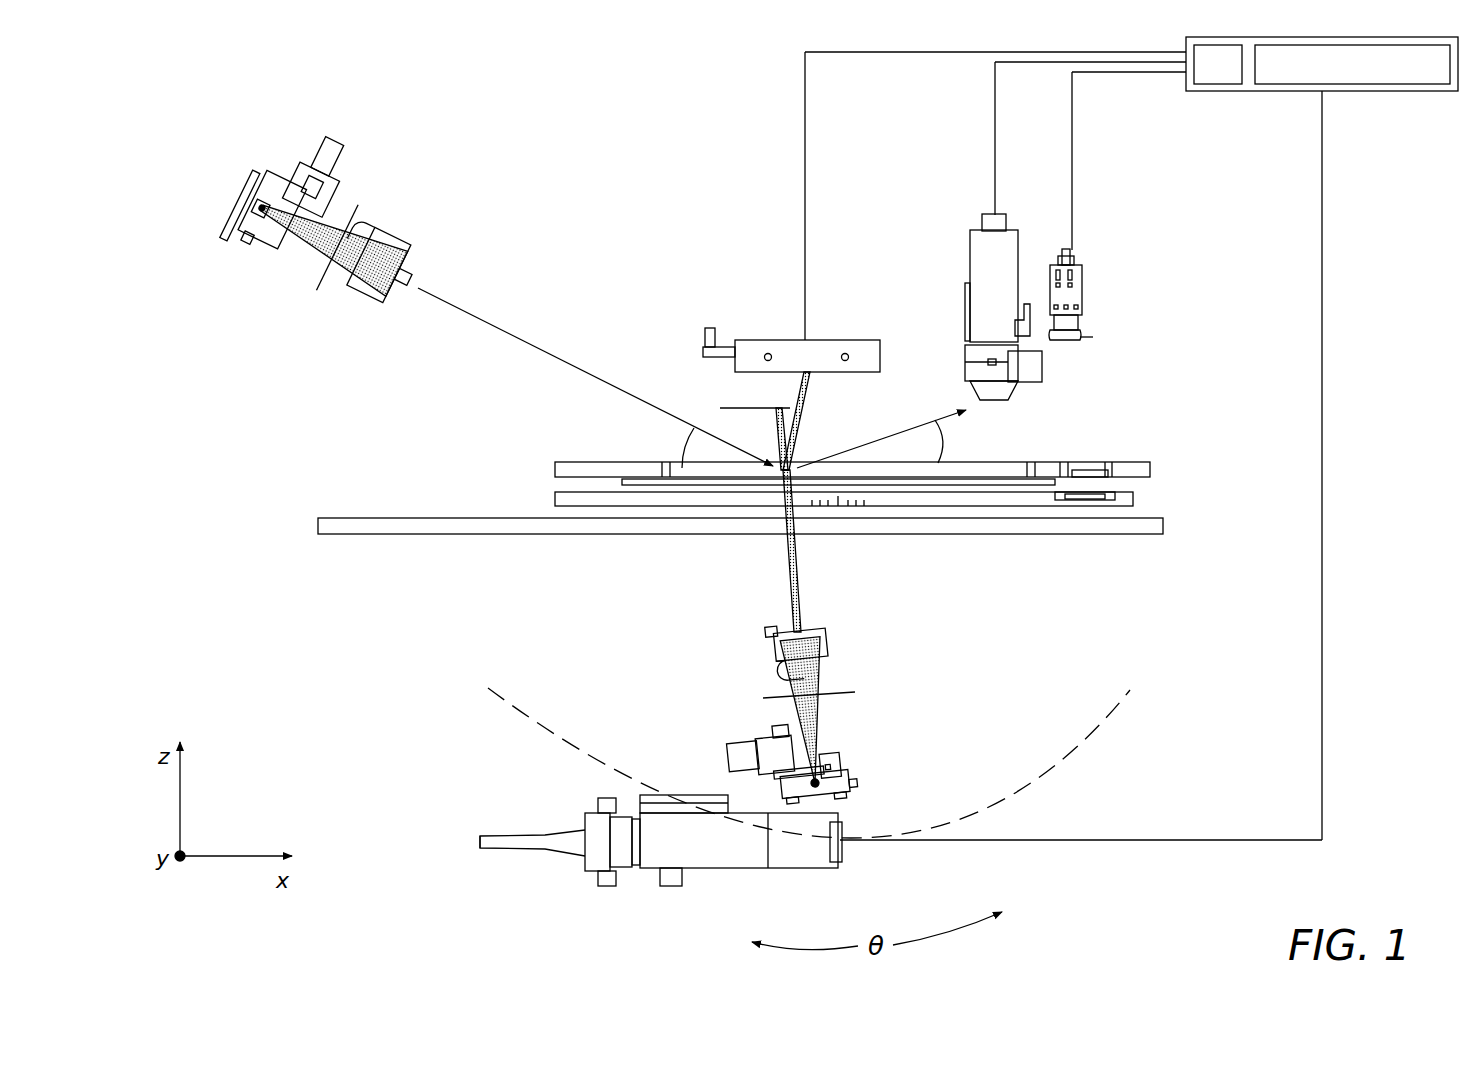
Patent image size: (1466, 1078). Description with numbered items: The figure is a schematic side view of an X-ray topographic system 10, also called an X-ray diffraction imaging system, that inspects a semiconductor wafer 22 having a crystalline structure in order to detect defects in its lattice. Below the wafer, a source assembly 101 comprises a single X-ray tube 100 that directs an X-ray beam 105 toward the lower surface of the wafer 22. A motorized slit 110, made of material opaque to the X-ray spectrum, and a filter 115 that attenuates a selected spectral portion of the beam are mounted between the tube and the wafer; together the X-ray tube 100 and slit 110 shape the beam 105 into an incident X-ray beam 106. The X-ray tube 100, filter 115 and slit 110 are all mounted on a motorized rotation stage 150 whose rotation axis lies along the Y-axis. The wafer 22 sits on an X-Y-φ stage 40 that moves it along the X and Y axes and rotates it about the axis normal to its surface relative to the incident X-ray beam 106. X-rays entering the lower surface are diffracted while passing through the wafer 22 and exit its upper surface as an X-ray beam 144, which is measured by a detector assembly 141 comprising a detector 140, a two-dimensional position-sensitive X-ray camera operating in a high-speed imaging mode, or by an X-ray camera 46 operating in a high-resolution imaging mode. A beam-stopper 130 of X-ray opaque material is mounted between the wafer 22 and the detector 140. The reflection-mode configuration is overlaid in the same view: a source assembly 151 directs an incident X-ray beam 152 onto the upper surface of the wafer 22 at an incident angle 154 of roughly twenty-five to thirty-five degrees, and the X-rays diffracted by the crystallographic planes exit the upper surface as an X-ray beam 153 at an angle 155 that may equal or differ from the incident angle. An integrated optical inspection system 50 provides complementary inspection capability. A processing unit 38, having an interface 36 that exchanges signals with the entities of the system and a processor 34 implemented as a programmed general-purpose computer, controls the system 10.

The X-ray topographic system 10 is at (410, 130).
The semiconductor wafer 22 is at (556, 476).
The processor 34 is at (1395, 90).
The interface 36 is at (1218, 90).
The processing unit 38 is at (1450, 92).
The X-Y-φ stage 40 is at (1097, 444).
The X-ray camera 46 is at (992, 282).
The integrated optical inspection system 50 is at (1084, 296).
The X-ray tube 100 is at (600, 842).
The source assembly 101 is at (383, 769).
The X-ray beam 105 is at (860, 715).
The incident X-ray beam 106 is at (782, 592).
The slit 110 is at (826, 634).
The filter 115 is at (760, 697).
The beam-stopper 130 is at (736, 406).
The detector 140 is at (792, 352).
The detector assembly 141 is at (682, 298).
The X-ray beam 144 is at (806, 388).
The motorized rotation stage 150 is at (1045, 770).
The source assembly 151 is at (215, 320).
The incident X-ray beam 152 is at (482, 318).
The X-ray beam 153 is at (940, 415).
The incident angle 154 is at (686, 448).
The angle 155 is at (942, 448).